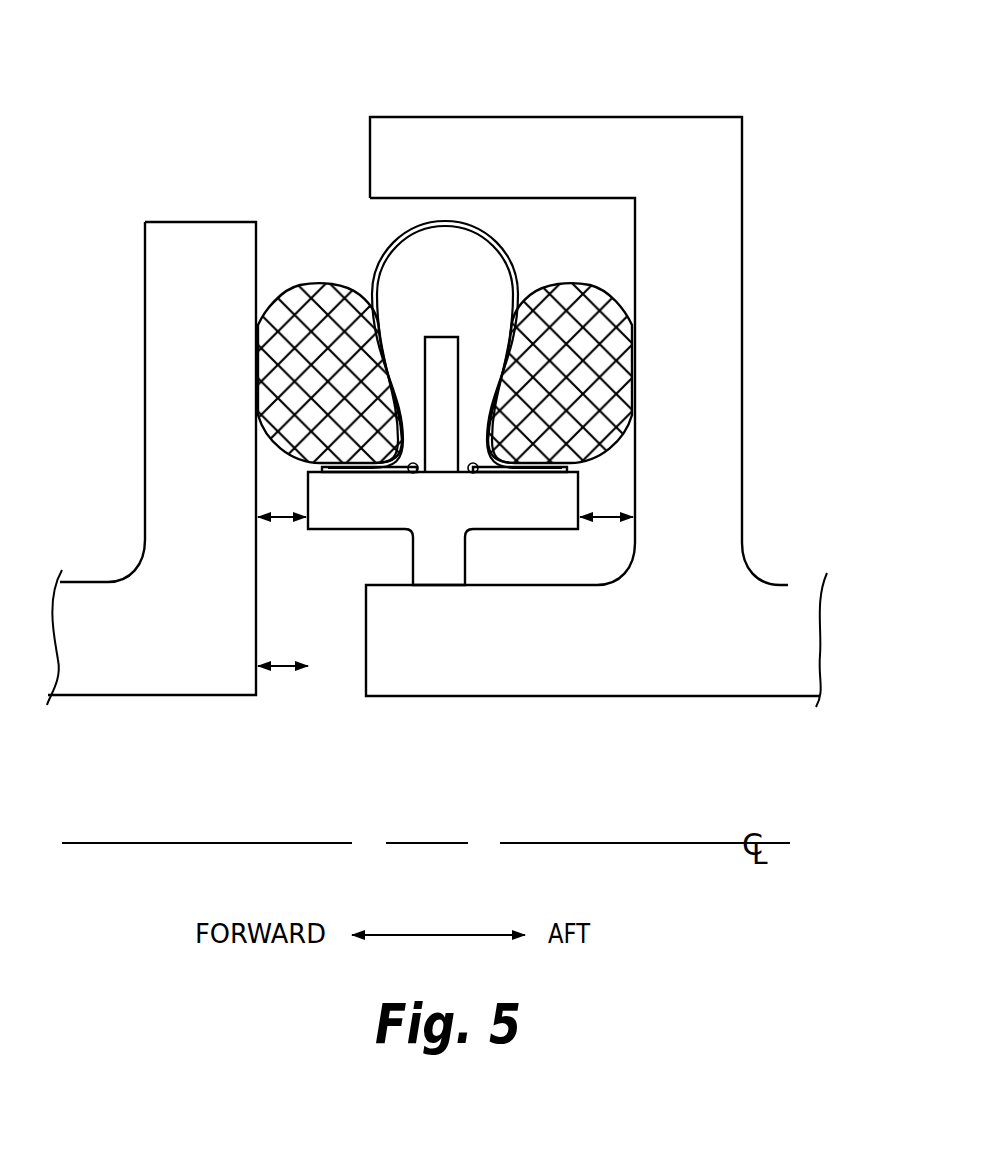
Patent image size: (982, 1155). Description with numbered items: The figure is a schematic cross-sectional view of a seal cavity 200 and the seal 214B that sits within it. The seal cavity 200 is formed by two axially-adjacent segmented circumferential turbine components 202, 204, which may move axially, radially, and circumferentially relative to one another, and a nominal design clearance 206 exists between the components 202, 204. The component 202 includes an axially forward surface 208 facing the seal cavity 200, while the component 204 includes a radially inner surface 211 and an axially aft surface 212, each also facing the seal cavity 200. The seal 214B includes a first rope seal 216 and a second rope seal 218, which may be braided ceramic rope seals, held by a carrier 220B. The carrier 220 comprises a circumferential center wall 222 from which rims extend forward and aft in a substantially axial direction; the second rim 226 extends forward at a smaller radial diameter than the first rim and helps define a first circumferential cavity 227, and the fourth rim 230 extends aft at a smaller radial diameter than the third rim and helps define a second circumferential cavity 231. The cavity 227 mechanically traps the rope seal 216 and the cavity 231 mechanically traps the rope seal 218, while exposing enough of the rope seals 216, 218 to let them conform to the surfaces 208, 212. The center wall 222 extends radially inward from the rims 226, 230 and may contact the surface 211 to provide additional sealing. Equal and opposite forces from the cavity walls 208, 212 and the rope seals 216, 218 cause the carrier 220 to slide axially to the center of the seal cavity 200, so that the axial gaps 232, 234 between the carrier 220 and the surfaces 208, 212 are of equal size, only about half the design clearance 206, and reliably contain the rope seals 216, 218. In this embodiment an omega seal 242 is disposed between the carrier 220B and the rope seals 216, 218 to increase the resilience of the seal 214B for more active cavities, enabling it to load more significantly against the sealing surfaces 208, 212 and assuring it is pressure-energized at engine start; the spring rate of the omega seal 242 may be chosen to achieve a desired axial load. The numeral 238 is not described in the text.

The seal cavity 200 is at (337, 147).
The turbine component 202 is at (123, 696).
The turbine component 204 is at (483, 697).
The nominal design clearance 206 is at (282, 671).
The axially forward surface 208 is at (257, 232).
The radially inner surface 211 is at (527, 586).
The axially aft surface 212 is at (635, 238).
The seal 214B is at (295, 190).
The first rope seal 216 is at (298, 325).
The second rope seal 218 is at (584, 318).
The carrier 220 is at (447, 218).
The carrier 220B is at (564, 535).
The circumferential center wall 222 is at (442, 414).
The second rim 226 is at (342, 500).
The first circumferential cavity 227 is at (416, 470).
The fourth rim 230 is at (578, 492).
The second circumferential cavity 231 is at (470, 476).
The axial gap 232 is at (282, 521).
The axial gap 234 is at (607, 523).
The seal system 238 is at (281, 28).
The omega seal 242 is at (483, 230).